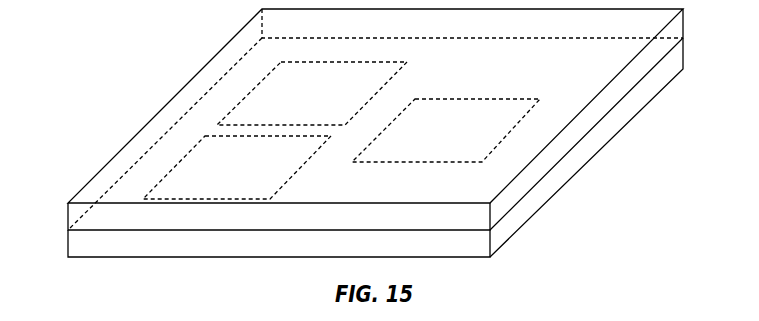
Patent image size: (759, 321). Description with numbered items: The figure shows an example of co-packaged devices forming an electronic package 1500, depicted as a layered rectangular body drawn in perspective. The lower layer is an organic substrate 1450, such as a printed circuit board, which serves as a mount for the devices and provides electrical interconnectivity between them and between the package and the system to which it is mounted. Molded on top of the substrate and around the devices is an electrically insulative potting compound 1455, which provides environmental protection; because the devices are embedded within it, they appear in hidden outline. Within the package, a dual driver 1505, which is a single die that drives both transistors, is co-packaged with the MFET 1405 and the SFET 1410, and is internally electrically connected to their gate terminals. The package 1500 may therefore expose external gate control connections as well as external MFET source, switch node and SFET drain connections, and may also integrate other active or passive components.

The electronic package 1500 is at (115, 69).
The electrically insulative potting compound 1455 is at (623, 85).
The organic substrate 1450 is at (562, 174).
The MFET 1405 is at (331, 103).
The SFET 1410 is at (259, 180).
The dual driver 1505 is at (468, 137).